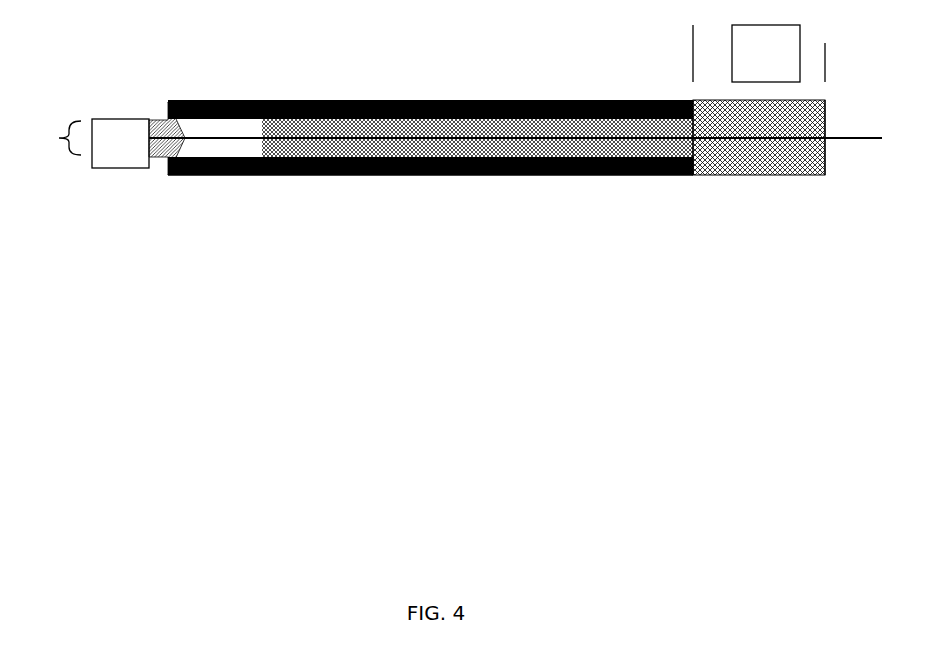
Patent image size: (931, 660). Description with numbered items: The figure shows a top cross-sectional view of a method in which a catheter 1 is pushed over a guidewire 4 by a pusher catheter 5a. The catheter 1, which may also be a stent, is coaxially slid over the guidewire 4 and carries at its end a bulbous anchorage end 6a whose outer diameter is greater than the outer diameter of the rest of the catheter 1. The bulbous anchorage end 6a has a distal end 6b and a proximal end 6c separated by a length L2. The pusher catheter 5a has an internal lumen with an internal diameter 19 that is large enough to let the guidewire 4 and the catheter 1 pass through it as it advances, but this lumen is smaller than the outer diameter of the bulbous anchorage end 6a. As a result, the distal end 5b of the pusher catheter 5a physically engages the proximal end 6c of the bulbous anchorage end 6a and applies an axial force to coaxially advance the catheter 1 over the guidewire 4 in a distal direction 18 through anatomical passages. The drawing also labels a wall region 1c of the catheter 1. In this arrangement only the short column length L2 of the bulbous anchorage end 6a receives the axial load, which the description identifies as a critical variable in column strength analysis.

The catheter 1 is at (430, 106).
The fiber cladding / coating 1c is at (335, 130).
The guidewire 4 is at (261, 130).
The pusher catheter 5a is at (257, 177).
The distal end of pusher catheter 5b is at (692, 178).
The bulbous anchorage end 6a is at (750, 158).
The distal end of bulbous anchorage end 6b is at (827, 158).
The proximal end of bulbous anchorage end 6c is at (697, 173).
The distal direction 18 is at (163, 100).
The internal diameter 19 is at (81, 143).
The length L2 is at (695, 63).